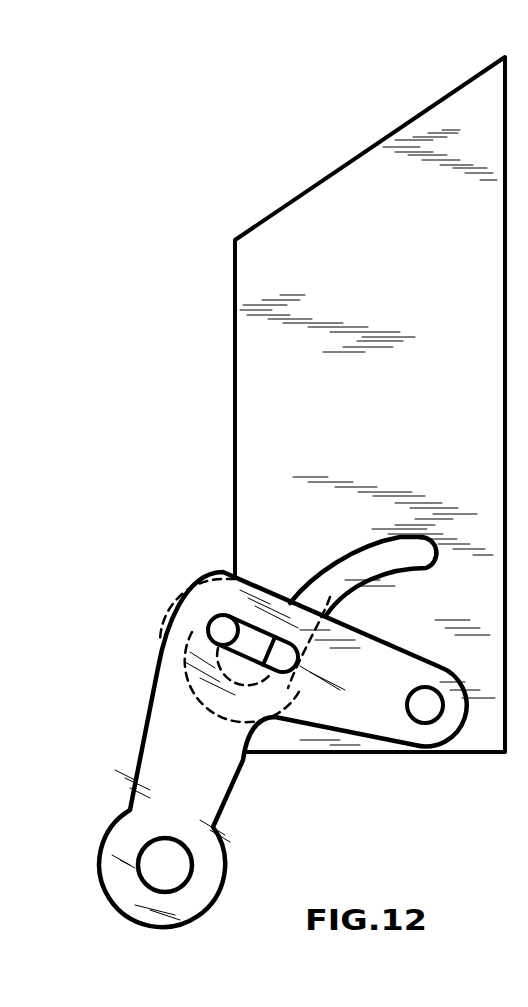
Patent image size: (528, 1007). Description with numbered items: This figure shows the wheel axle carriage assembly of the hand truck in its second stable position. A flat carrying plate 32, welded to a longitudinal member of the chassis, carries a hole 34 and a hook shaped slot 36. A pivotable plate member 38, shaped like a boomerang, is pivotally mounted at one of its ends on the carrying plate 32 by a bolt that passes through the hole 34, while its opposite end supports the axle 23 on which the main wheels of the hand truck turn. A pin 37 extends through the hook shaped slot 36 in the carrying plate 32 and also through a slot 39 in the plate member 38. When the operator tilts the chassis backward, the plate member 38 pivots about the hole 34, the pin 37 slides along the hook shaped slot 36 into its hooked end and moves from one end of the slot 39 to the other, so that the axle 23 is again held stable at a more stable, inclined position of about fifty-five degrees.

The carrying plate 32 is at (233, 322).
The hole 34 is at (407, 704).
The hook shaped slot 36 is at (368, 568).
The pin 37 is at (207, 620).
The pivotable plate member 38 is at (142, 750).
The slot 39 is at (282, 657).
The axle 23 is at (190, 858).